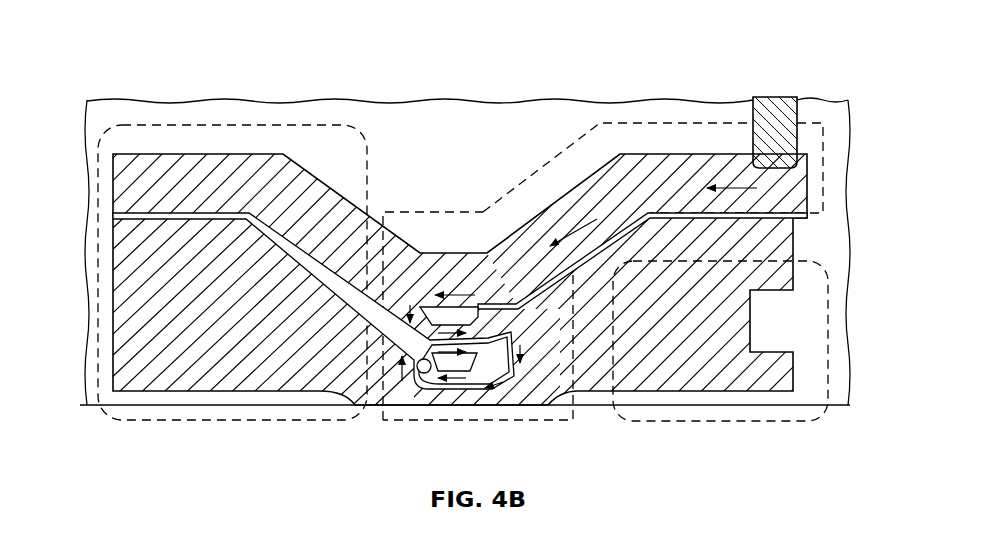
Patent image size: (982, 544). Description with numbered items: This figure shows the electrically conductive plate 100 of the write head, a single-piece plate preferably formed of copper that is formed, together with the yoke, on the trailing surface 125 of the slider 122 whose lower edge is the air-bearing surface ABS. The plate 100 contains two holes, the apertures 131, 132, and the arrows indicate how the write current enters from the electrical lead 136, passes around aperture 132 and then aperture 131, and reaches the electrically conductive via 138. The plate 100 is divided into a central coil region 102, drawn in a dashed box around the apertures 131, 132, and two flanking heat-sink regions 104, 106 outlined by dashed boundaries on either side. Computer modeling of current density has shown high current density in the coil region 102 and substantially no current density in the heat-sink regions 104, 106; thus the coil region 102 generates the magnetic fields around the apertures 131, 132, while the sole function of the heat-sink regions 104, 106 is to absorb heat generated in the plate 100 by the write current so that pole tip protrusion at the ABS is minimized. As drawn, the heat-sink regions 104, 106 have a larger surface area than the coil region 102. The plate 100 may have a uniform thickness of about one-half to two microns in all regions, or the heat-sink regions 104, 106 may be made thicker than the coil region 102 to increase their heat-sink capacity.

The plate 100 is at (192, 162).
The coil region 102 is at (535, 423).
The heat-sink region 104 is at (200, 420).
The heat-sink region 106 is at (763, 423).
The slider 122 is at (588, 93).
The trailing surface 125 is at (483, 117).
The aperture 131 is at (476, 360).
The aperture 132 is at (477, 303).
The electrical lead 136 is at (775, 108).
The electrically conductive via 138 is at (427, 372).
The air-bearing surface ABS is at (600, 407).